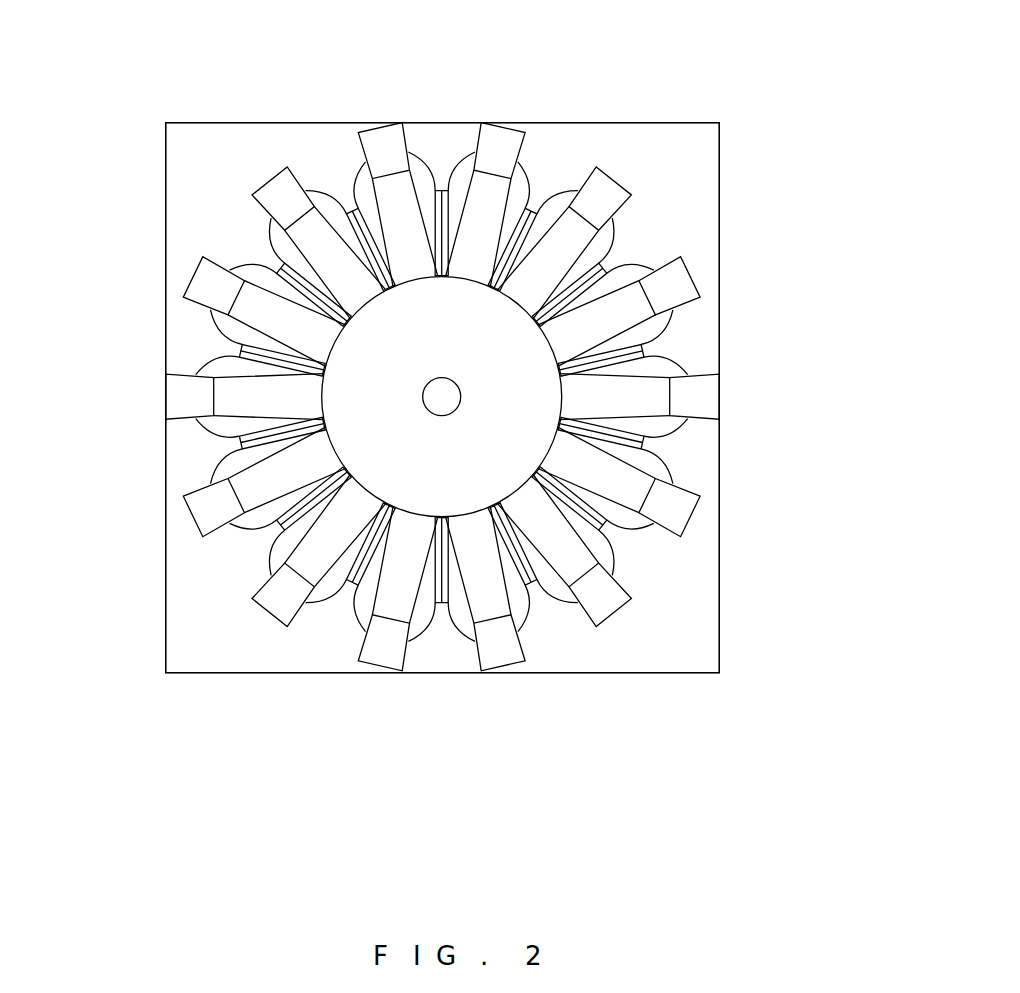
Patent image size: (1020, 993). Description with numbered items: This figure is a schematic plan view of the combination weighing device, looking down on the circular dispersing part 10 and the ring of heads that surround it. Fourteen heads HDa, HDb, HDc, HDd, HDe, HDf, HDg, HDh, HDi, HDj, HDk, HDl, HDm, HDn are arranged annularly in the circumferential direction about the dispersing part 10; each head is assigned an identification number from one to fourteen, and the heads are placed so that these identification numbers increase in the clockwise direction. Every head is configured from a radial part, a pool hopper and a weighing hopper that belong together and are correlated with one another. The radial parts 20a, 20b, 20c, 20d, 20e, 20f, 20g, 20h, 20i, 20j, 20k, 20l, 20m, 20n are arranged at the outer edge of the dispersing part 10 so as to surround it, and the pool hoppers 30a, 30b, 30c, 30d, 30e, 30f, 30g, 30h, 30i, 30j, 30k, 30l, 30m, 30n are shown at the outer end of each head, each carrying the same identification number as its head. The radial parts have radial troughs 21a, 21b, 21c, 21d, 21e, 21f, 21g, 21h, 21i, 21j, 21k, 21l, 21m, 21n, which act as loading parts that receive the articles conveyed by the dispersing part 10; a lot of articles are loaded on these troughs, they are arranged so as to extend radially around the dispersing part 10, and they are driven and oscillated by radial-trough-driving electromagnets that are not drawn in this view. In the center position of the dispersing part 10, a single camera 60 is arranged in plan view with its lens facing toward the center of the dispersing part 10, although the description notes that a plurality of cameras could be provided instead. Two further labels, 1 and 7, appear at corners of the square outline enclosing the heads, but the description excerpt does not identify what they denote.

The printing apparatus 1 is at (745, 125).
The housing frame 7 is at (165, 662).
The dispersing part 10 is at (467, 448).
The camera 60 is at (445, 392).
The head HDa is at (278, 162).
The head HDb is at (375, 117).
The head HDc is at (503, 112).
The head HDd is at (620, 168).
The head HDe is at (700, 270).
The head HDf is at (727, 397).
The head HDg is at (706, 523).
The head HDh is at (620, 622).
The head HDi is at (508, 683).
The head HDj is at (383, 690).
The head HDk is at (260, 622).
The head HDl is at (173, 521).
The head HDm is at (162, 396).
The head HDn is at (180, 272).
The radial part 20a is at (317, 176).
The radial part 20b is at (427, 147).
The radial part 20c is at (541, 160).
The radial part 20d is at (628, 228).
The radial part 20e is at (686, 324).
The radial part 20f is at (695, 437).
The radial part 20g is at (650, 532).
The radial part 20h is at (560, 617).
The radial part 20i is at (453, 640).
The radial part 20j is at (352, 620).
The radial part 20k is at (258, 580).
The radial part 20l is at (198, 462).
The radial part 20m is at (192, 363).
The radial part 20n is at (232, 260).
The radial trough 21a is at (362, 293).
The radial trough 21b is at (411, 270).
The radial trough 21c is at (484, 222).
The radial trough 21d is at (522, 293).
The radial trough 21e is at (645, 282).
The radial trough 21f is at (572, 404).
The radial trough 21g is at (560, 442).
The radial trough 21h is at (527, 503).
The radial trough 21i is at (473, 543).
The radial trough 21j is at (402, 672).
The radial trough 21k is at (357, 497).
The radial trough 21l is at (332, 450).
The radial trough 21m is at (213, 392).
The radial trough 21n is at (325, 347).
The pool hopper 30a is at (267, 187).
The pool hopper 30b is at (392, 133).
The pool hopper 30c is at (517, 137).
The pool hopper 30d is at (626, 190).
The pool hopper 30e is at (692, 290).
The pool hopper 30f is at (713, 417).
The pool hopper 30g is at (702, 503).
The pool hopper 30h is at (597, 626).
The pool hopper 30i is at (481, 670).
The pool hopper 30j is at (370, 658).
The pool hopper 30k is at (282, 622).
The pool hopper 30l is at (195, 528).
The pool hopper 30m is at (168, 402).
The pool hopper 30n is at (192, 270).